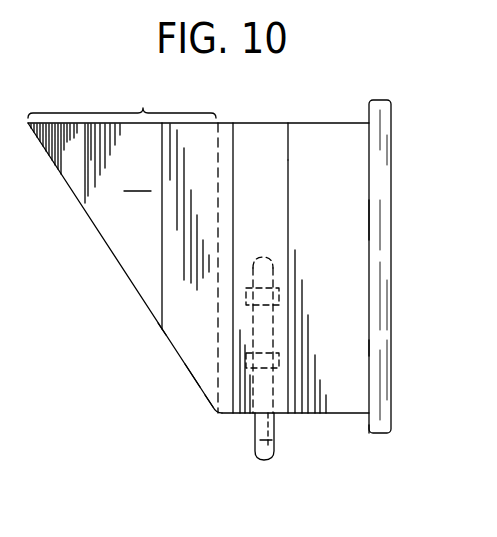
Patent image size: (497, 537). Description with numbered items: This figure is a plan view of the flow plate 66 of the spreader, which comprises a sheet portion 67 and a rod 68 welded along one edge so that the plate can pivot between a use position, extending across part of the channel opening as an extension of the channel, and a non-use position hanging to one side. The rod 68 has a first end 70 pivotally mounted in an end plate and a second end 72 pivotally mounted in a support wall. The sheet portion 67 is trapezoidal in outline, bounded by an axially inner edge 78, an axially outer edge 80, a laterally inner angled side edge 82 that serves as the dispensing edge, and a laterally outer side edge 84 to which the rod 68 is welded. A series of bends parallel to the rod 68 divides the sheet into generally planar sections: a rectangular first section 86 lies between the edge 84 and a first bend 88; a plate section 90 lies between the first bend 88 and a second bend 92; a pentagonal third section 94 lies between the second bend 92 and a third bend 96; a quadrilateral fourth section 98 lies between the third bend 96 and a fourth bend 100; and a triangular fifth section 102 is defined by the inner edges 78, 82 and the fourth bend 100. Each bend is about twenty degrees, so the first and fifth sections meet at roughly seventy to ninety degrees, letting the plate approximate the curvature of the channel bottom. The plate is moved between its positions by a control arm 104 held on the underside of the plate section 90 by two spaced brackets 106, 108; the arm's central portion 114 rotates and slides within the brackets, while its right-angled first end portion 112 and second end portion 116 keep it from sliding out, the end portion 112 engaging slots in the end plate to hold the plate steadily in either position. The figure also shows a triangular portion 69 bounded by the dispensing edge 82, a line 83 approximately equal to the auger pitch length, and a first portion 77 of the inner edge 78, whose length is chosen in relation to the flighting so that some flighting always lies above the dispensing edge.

The flow plate 66 is at (200, 432).
The sheet portion 67 is at (167, 328).
The rod 68 is at (392, 223).
The triangular portion 69 is at (137, 178).
The first end 70 is at (383, 435).
The second end 72 is at (382, 98).
The first portion of lateral edge 77 is at (122, 97).
The axially inner edge 78 is at (281, 122).
The axially outer edge 80 is at (342, 414).
The laterally inner angled side edge 82 is at (143, 302).
The line 83 is at (220, 367).
The laterally outer side edge 84 is at (372, 348).
The first section 86 is at (343, 203).
The first bend 88 is at (288, 152).
The plate section 90 is at (275, 197).
The second bend 92 is at (233, 160).
The third section 94 is at (190, 335).
The third bend 96 is at (162, 258).
The fourth section 98 is at (117, 225).
The fourth bend 100 is at (83, 192).
The fifth section 102 is at (67, 162).
The control arm 104 is at (253, 458).
The bracket 106 is at (293, 365).
The bracket 108 is at (285, 293).
The first end portion 112 is at (270, 458).
The central portion 114 is at (272, 332).
The second end portion 116 is at (293, 262).